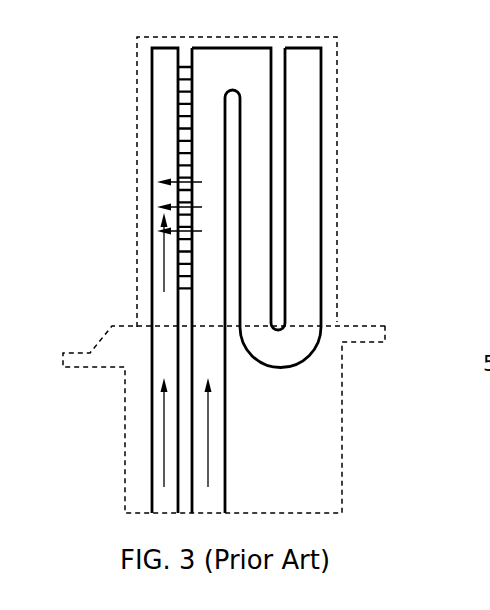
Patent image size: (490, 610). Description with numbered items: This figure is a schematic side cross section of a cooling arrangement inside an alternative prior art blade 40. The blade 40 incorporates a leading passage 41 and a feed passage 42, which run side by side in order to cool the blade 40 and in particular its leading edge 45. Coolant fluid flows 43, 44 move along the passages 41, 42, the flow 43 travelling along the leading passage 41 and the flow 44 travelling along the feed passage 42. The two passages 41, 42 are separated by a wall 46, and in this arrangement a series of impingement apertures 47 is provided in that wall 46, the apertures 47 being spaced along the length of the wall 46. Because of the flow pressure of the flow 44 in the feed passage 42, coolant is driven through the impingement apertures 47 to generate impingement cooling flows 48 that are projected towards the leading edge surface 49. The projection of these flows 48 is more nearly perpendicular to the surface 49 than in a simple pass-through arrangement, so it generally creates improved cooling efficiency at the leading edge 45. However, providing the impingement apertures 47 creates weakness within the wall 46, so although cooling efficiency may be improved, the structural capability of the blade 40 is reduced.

The blade 40 is at (307, 440).
The leading passage 41 is at (155, 142).
The feed passage 42 is at (213, 170).
The coolant fluid flow 43 is at (155, 257).
The coolant fluid flow 44 is at (207, 432).
The leading edge 45 is at (137, 216).
The wall 46 is at (185, 59).
The impingement apertures 47 is at (193, 122).
The impingement cooling flows 48 is at (152, 188).
The leading edge surface 49 is at (152, 97).